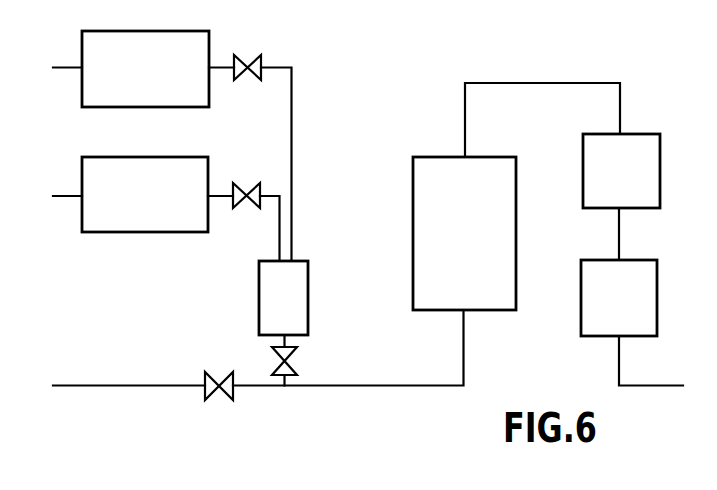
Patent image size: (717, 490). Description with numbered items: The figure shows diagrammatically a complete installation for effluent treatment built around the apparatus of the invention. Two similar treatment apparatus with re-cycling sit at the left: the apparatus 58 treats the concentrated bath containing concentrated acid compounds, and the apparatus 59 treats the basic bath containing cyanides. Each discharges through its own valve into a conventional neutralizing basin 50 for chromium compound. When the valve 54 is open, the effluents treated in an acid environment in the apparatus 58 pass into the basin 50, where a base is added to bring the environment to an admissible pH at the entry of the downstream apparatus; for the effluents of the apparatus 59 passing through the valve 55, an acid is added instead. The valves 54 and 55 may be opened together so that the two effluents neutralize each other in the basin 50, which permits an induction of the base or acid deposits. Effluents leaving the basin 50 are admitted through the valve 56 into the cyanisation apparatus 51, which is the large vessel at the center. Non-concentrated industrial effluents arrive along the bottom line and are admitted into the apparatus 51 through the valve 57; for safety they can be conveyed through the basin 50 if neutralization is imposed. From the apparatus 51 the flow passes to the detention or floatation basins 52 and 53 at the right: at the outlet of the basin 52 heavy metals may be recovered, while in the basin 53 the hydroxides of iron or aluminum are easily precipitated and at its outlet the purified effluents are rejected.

The neutralizing basin 50 is at (308, 303).
The cyanisation apparatus 51 is at (479, 312).
The detention or floatation basin 52 is at (600, 133).
The detention or floatation basin 53 is at (592, 259).
The valve 54 is at (258, 64).
The valve 55 is at (258, 190).
The valve 56 is at (291, 368).
The valve 57 is at (231, 393).
The treatment apparatus for concentrated acid bath 58 is at (202, 44).
The treatment apparatus for basic bath 59 is at (199, 172).